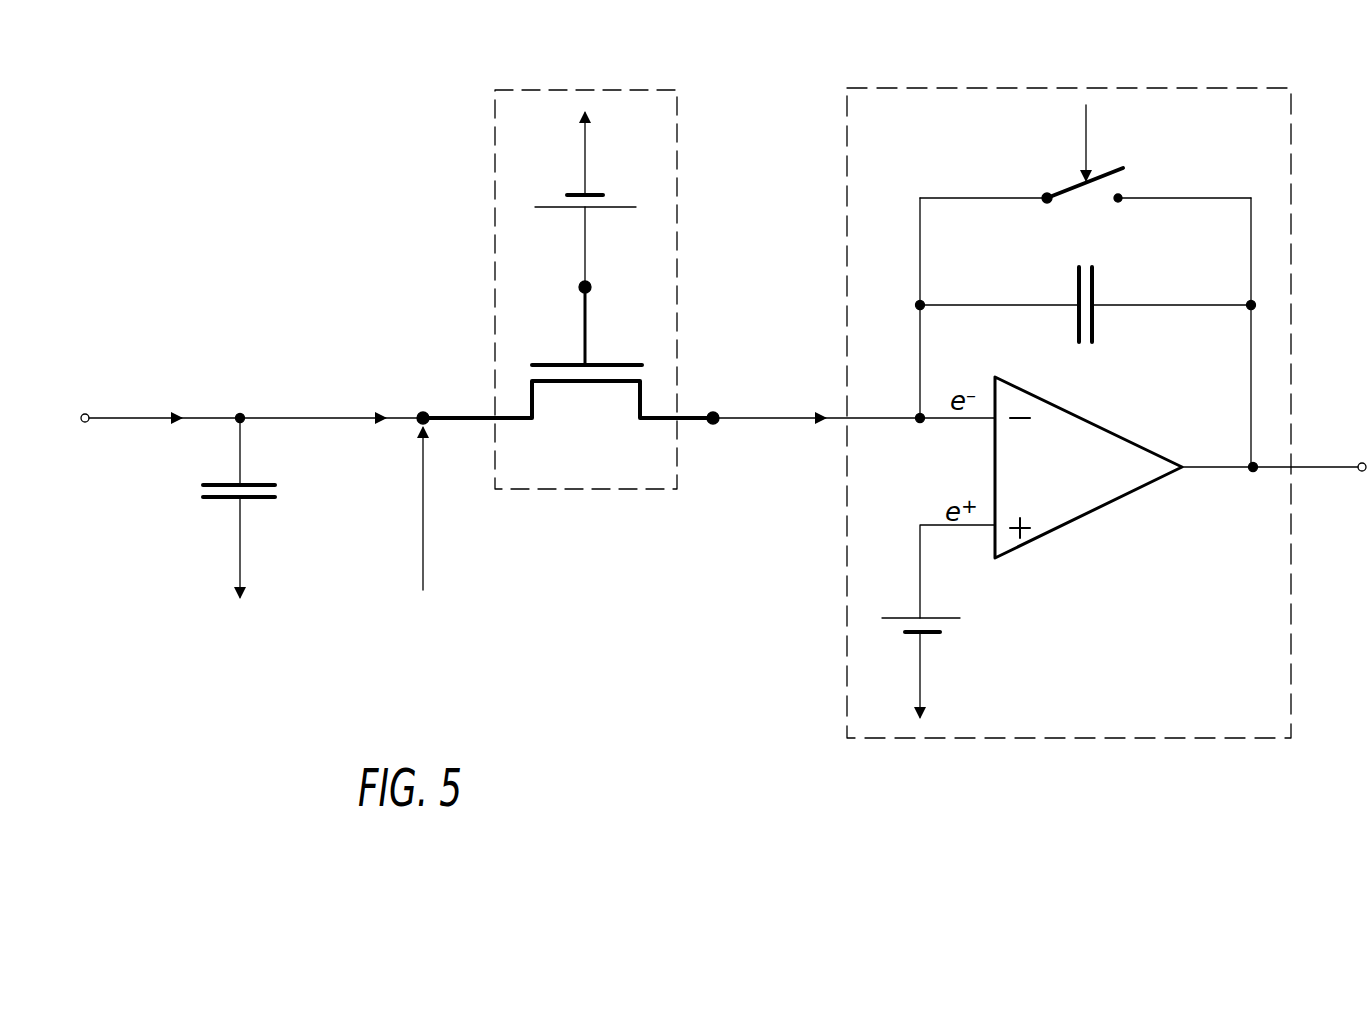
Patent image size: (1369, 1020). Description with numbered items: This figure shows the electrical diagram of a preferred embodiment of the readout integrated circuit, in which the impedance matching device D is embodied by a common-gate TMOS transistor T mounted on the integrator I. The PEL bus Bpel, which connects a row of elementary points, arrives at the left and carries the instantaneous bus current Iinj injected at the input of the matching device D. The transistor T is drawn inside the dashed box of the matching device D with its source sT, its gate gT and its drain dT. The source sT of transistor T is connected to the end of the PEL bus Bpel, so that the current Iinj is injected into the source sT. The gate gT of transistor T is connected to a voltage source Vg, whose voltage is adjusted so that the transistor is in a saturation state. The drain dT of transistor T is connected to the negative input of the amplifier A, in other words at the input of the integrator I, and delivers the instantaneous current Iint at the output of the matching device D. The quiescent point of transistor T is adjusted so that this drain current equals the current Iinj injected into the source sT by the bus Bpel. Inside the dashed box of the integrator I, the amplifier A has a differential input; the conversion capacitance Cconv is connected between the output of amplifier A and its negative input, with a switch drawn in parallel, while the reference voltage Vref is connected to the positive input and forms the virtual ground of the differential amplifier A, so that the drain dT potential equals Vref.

The PEL bus Bpel is at (275, 418).
The instantaneous bus current Iinj is at (345, 437).
The source of transistor T sT is at (413, 479).
The gate of transistor T gT is at (605, 281).
The drain of transistor T dT is at (717, 398).
The TMOS transistor T is at (582, 386).
The impedance matching device D is at (545, 489).
The voltage source Vg is at (593, 200).
The instantaneous output current Iint is at (787, 435).
The integrator I is at (847, 578).
The conversion capacitance Cconv is at (1094, 335).
The amplifier A is at (1088, 467).
The reference voltage Vref is at (943, 621).